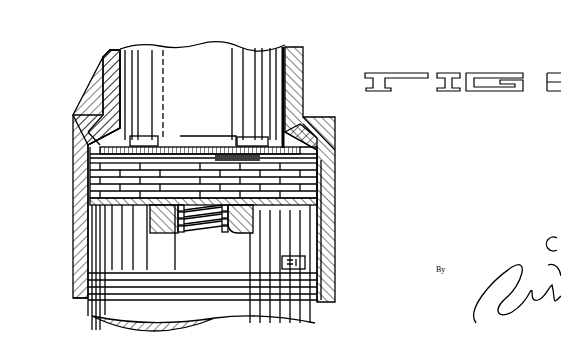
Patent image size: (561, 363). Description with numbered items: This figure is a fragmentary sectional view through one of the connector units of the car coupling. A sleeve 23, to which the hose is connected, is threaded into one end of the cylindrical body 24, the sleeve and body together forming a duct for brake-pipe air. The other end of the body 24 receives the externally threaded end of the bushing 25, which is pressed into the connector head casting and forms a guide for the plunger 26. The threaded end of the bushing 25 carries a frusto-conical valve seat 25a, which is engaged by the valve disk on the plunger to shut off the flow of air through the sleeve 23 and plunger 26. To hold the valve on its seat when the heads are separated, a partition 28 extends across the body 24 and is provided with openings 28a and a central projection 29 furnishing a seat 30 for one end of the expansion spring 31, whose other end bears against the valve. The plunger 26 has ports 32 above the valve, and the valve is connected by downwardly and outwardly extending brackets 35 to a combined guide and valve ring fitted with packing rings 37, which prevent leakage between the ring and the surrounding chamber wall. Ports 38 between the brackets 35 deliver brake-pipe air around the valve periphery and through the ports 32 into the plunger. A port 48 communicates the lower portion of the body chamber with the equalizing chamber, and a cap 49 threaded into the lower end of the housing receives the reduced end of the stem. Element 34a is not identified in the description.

The sleeve 23 is at (91, 312).
The cylindrical body 24 is at (335, 236).
The bushing 25 is at (298, 92).
The frusto-conical valve seat 25a is at (318, 146).
The plunger 26 is at (204, 57).
The partition 28 is at (100, 206).
The openings 28a is at (130, 203).
The central projection 29 is at (243, 229).
The seat 30 is at (232, 218).
The expansion spring 31 is at (206, 214).
The ports 32 is at (192, 140).
The gasket 34a is at (88, 130).
The brackets 35 is at (335, 169).
The packing rings 37 is at (88, 175).
The ports 38 is at (233, 167).
The port 48 is at (307, 270).
The cap 49 is at (101, 254).